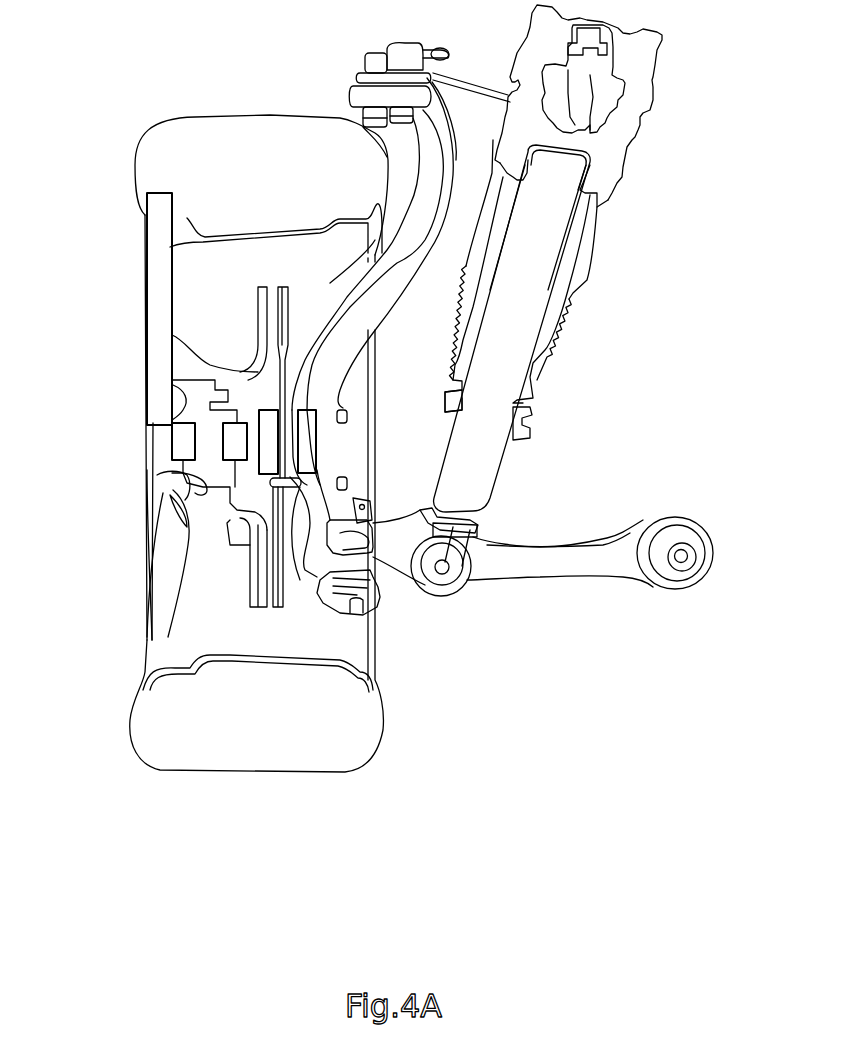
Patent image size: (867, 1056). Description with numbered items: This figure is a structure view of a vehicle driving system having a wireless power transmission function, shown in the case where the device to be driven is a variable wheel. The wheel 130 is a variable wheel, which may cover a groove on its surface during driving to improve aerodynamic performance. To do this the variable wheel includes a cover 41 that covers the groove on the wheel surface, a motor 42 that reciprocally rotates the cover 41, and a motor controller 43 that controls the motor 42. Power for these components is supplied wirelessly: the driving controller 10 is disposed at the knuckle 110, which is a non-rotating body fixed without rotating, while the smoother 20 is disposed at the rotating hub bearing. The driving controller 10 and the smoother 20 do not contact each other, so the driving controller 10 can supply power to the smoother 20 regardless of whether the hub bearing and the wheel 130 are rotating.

The driving controller 10 is at (320, 435).
The knuckle 110 is at (350, 352).
The smoother 20 is at (323, 507).
The cover 41 is at (147, 263).
The motor 42 is at (172, 440).
The motor controller 43 is at (230, 517).
The wheel 130 is at (152, 508).